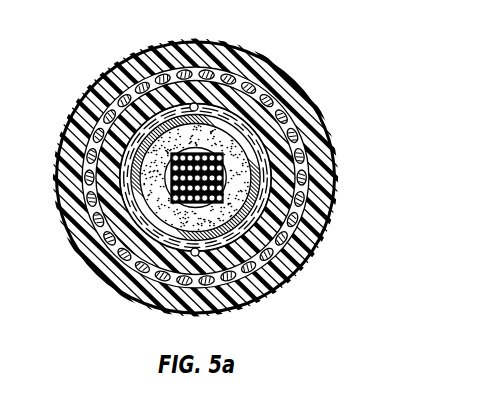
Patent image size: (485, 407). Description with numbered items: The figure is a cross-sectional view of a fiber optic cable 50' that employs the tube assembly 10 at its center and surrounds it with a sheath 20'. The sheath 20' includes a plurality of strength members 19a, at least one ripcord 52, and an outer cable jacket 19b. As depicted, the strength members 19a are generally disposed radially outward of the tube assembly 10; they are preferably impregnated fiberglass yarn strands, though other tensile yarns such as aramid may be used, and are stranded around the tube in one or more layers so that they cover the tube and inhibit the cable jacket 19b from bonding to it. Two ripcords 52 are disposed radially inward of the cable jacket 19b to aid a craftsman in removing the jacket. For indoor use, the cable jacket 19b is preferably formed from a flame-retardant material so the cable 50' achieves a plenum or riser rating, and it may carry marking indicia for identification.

The fiber optic cable 50' is at (182, 165).
The sheath 20' is at (242, 178).
The tube assembly 10 is at (303, 150).
The strength members 19a is at (300, 145).
The cable jacket 19b is at (128, 240).
The ripcord 52 is at (124, 152).